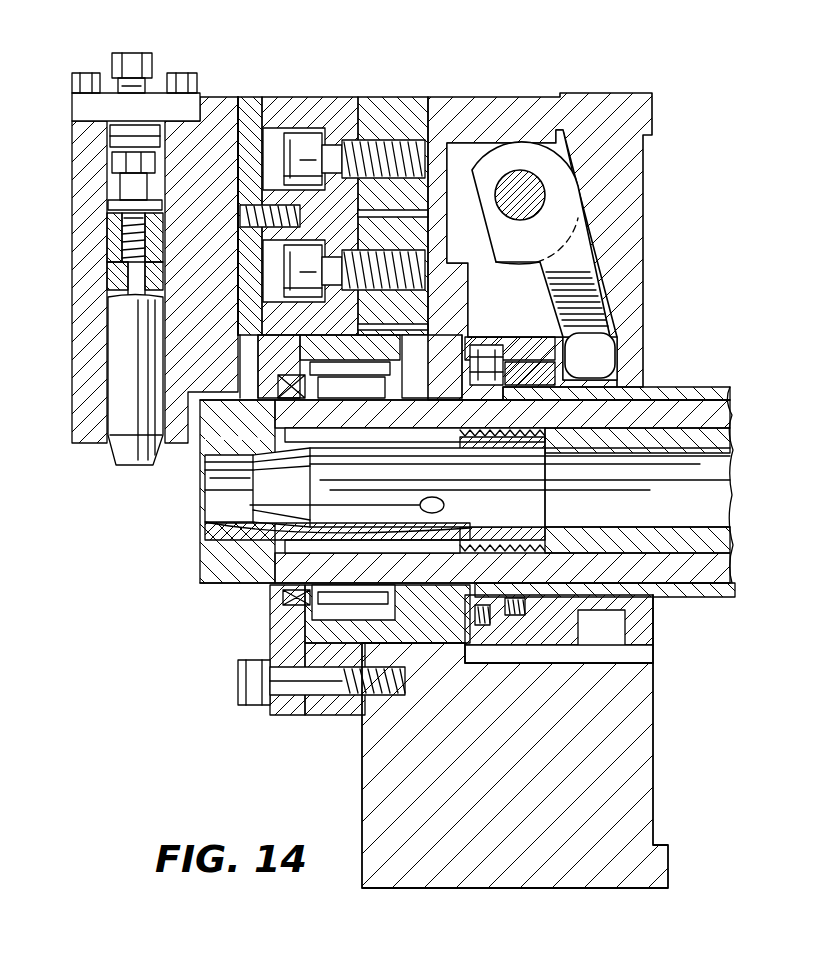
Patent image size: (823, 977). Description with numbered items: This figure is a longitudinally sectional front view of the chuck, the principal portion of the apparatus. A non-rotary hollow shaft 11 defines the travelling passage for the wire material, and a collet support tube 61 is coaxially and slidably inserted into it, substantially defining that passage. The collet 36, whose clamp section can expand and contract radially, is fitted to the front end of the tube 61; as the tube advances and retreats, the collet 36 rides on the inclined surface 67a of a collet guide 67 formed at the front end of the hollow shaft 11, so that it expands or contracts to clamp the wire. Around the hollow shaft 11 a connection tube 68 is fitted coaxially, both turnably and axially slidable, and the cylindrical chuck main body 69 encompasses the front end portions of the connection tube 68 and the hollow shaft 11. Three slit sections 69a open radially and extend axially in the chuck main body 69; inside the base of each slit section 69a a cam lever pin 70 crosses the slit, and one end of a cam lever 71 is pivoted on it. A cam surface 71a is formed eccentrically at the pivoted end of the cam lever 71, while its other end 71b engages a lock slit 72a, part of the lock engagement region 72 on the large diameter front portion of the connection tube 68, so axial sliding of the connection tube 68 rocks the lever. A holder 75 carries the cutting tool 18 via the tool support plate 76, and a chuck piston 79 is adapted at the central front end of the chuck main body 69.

The hollow shaft 11 is at (724, 410).
The cutting tool 18 is at (125, 352).
The collet 36 is at (226, 543).
The collet support tube 61 is at (730, 546).
The collet guide 67 is at (214, 585).
The inclined surface 67a is at (214, 548).
The connection tube 68 is at (672, 600).
The chuck main body 69 is at (378, 744).
The slit section 69a is at (600, 262).
The cam lever pin 70 is at (506, 207).
The cam lever 71 is at (581, 239).
The cam surface 71a is at (512, 262).
The other end of the cam lever 71b is at (612, 325).
The thrust bar 72 is at (526, 347).
The lock slit 72a is at (616, 354).
The holder 75 is at (205, 112).
The tool support plate 76 is at (82, 104).
The chuck piston 79 is at (286, 712).